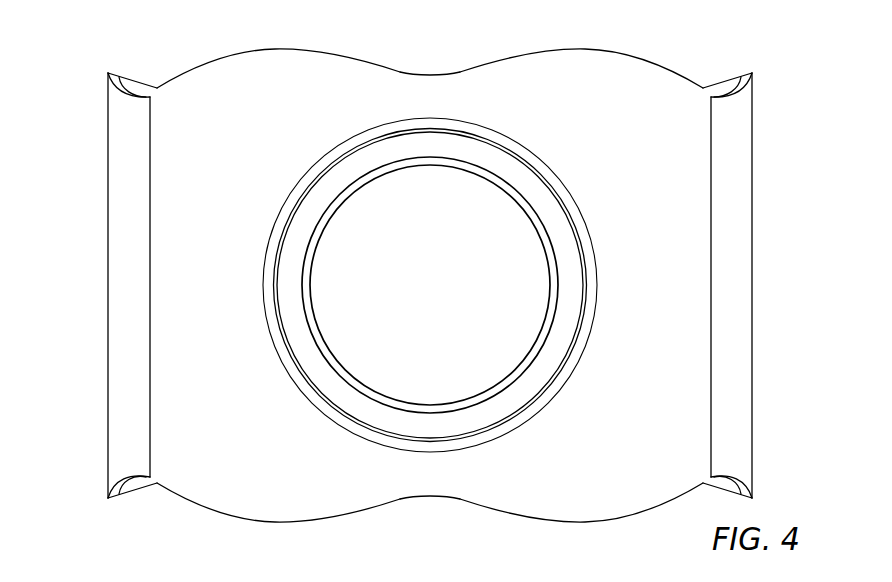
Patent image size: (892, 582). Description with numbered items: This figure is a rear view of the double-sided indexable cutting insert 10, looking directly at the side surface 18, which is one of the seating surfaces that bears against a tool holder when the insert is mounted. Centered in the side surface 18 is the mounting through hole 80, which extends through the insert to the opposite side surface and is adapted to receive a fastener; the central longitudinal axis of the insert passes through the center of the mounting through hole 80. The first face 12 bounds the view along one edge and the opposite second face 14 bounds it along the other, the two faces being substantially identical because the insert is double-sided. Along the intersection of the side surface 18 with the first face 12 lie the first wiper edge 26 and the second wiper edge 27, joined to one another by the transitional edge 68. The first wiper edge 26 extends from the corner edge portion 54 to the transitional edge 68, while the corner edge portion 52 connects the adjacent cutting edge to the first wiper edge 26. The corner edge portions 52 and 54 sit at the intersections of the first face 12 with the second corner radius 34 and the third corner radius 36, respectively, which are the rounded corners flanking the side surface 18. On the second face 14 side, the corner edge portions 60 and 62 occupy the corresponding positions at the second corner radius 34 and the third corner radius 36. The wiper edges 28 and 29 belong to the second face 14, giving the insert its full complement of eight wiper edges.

The cutting insert 10 is at (92, 64).
The first face 12 is at (380, 46).
The second face 14 is at (456, 514).
The side surface 18 is at (689, 312).
The first wiper edge 26 is at (228, 60).
The second wiper edge 27 is at (590, 59).
The first wiper edge 28 is at (603, 520).
The second wiper edge 29 is at (228, 525).
The second corner radius 34 is at (122, 240).
The third corner radius 36 is at (735, 188).
The corner edge portion 52 is at (128, 94).
The corner edge portion 54 is at (735, 91).
The corner edge portion 60 is at (126, 474).
The corner edge portion 62 is at (735, 472).
The transitional edge 68 is at (438, 74).
The mounting through hole 80 is at (456, 181).